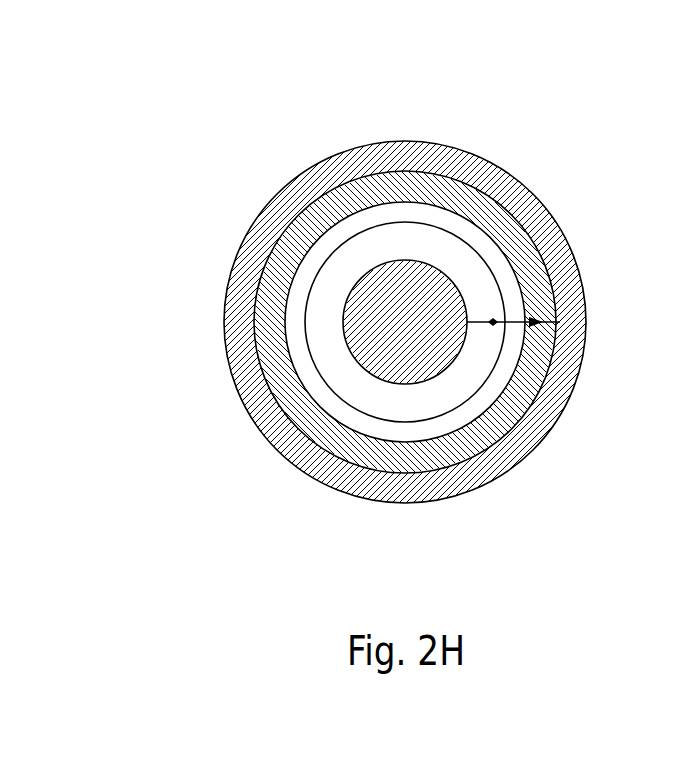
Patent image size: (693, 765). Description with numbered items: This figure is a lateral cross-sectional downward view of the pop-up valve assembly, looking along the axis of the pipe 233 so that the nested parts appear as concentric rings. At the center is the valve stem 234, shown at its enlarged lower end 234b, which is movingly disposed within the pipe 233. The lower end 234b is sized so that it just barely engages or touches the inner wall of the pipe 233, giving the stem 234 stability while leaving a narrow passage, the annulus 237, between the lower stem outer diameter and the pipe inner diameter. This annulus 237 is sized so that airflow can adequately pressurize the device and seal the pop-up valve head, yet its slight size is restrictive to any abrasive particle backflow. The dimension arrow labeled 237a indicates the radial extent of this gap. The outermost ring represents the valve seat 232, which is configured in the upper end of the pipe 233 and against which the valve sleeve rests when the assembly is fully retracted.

The valve seat 232 is at (437, 160).
The pipe 233 is at (333, 193).
The valve stem 234 is at (403, 345).
The lower end of valve stem 234b is at (330, 322).
The annulus 237 is at (273, 447).
The sheath wall thickness 237a is at (567, 231).